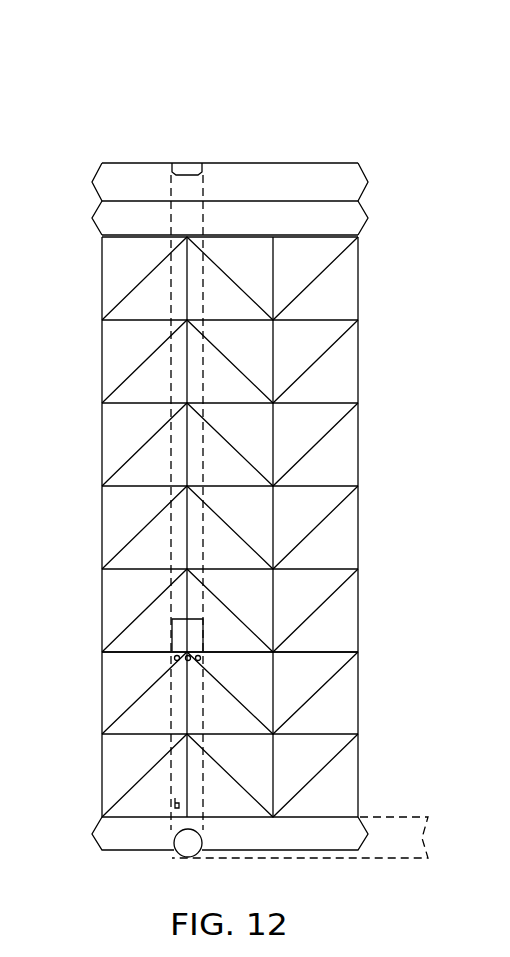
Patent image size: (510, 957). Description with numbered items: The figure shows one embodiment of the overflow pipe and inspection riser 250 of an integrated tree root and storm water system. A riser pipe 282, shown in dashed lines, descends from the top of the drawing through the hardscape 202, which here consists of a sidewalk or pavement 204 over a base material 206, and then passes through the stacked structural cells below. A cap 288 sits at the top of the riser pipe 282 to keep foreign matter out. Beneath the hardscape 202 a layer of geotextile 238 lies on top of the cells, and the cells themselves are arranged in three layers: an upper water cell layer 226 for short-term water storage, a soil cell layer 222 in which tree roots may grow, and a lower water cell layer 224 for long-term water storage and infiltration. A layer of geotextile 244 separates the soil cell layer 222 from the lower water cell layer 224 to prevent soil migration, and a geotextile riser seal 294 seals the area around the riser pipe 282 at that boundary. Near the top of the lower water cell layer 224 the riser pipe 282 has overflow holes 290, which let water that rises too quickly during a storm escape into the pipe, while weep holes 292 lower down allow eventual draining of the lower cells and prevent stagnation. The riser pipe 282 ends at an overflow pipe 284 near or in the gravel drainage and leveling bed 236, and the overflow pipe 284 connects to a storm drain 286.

The overflow pipe and inspection riser 250 is at (183, 100).
The hardscape 202 is at (261, 199).
The sidewalk or pavement 204 is at (342, 190).
The base material 206 is at (332, 230).
The geotextile 238 is at (127, 234).
The cap 288 is at (176, 162).
The riser pipe 282 is at (211, 176).
The upper water cell layer 226 is at (371, 238).
The soil cell layer 222 is at (371, 404).
The lower water cell layer 224 is at (371, 653).
The geotextile riser seal 294 is at (178, 628).
The geotextile 244 is at (148, 654).
The overflow holes 290 is at (180, 661).
The weep holes 292 is at (172, 803).
The overflow pipe 284 is at (188, 843).
The gravel drainage and leveling bed 236 is at (152, 848).
The storm drain 286 is at (408, 848).